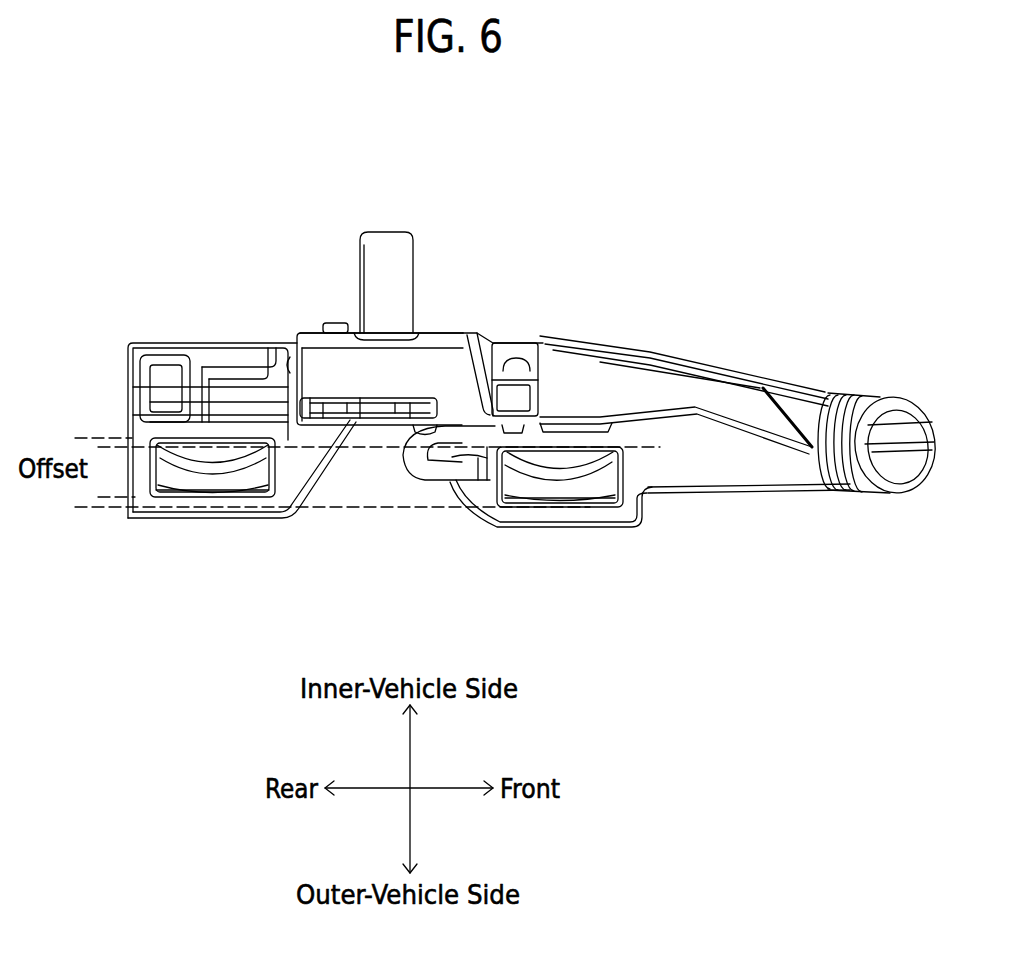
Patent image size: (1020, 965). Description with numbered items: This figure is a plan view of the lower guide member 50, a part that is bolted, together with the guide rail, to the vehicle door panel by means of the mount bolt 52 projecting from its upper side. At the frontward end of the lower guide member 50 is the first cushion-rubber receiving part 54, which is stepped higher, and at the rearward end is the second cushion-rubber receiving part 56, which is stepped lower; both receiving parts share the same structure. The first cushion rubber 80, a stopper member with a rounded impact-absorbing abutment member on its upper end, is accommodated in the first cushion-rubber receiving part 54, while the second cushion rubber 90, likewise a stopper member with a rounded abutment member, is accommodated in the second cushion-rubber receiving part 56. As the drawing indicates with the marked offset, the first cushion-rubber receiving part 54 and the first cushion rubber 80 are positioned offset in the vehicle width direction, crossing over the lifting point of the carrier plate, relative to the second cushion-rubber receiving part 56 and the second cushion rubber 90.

The lower guide member 50 is at (725, 466).
The mount bolt 52 is at (398, 283).
The first cushion-rubber receiving part 54 is at (528, 500).
The second cushion-rubber receiving part 56 is at (172, 487).
The first cushion rubber 80 is at (587, 497).
The second cushion rubber 90 is at (237, 483).